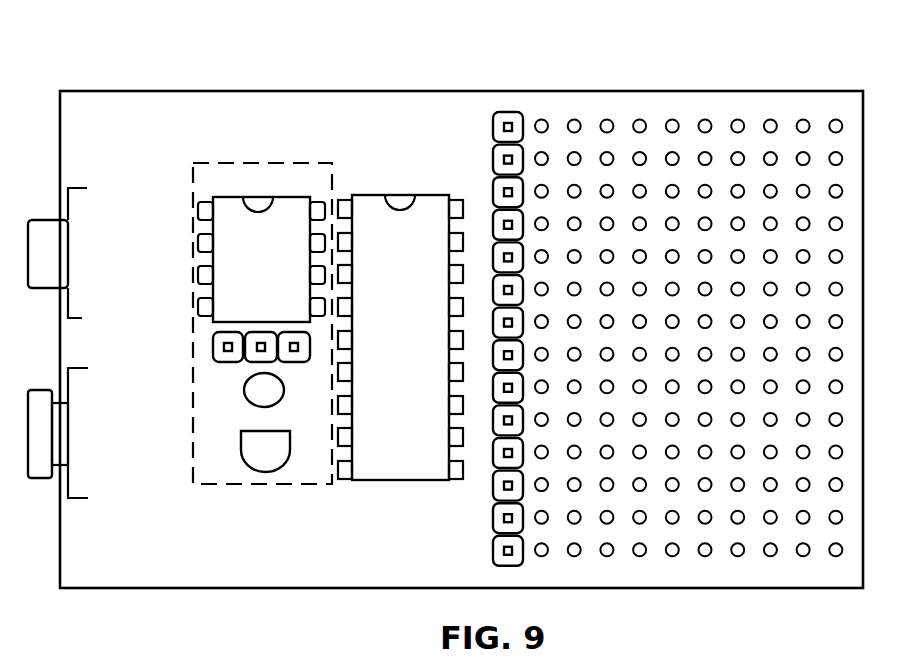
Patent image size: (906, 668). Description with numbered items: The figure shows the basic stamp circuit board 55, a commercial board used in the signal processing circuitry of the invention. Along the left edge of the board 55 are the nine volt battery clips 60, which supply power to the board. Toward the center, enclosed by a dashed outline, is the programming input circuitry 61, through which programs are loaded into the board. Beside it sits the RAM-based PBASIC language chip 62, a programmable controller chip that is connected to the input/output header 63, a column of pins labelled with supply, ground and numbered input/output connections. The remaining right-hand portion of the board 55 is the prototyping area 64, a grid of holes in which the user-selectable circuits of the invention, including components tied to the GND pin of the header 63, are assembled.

The basic stamp circuit board 55 is at (110, 91).
The 9 volt battery clips 60 is at (38, 219).
The programming input circuitry 61 is at (333, 167).
The RAM-based PBASIC language chip 62 is at (368, 482).
The input/output header 63 is at (512, 112).
The prototyping area 64 is at (708, 68).